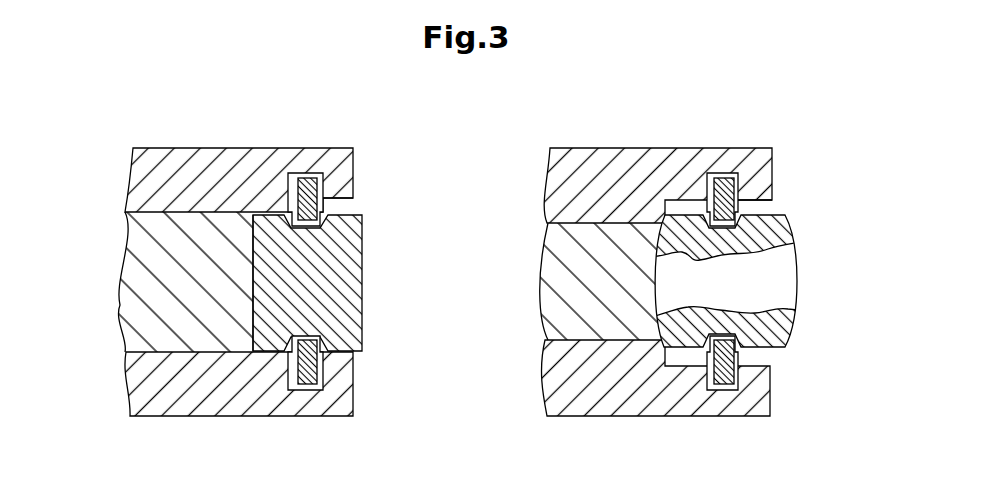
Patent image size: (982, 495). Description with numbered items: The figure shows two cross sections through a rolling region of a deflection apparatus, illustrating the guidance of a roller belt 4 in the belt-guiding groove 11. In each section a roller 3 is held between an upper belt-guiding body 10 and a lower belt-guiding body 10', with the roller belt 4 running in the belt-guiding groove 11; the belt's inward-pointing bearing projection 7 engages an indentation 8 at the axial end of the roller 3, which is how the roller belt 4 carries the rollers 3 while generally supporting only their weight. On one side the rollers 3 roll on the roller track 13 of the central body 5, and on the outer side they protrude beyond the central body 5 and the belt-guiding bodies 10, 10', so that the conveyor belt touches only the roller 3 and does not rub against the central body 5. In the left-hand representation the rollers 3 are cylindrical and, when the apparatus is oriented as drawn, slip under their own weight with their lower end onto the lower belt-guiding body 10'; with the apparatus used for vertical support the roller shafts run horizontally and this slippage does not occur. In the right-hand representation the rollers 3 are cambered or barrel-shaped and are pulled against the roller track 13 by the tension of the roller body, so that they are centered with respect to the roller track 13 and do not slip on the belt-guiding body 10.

The roller 3 is at (334, 313).
The roller belt 4 is at (316, 191).
The central body 5 is at (102, 261).
The bearing projection 7 is at (334, 207).
The indentation 8 is at (328, 222).
The belt-guiding body 10 is at (480, 152).
The lower belt-guiding body 10' is at (487, 389).
The belt-guiding groove 11 is at (322, 374).
The roller track 13 is at (263, 327).